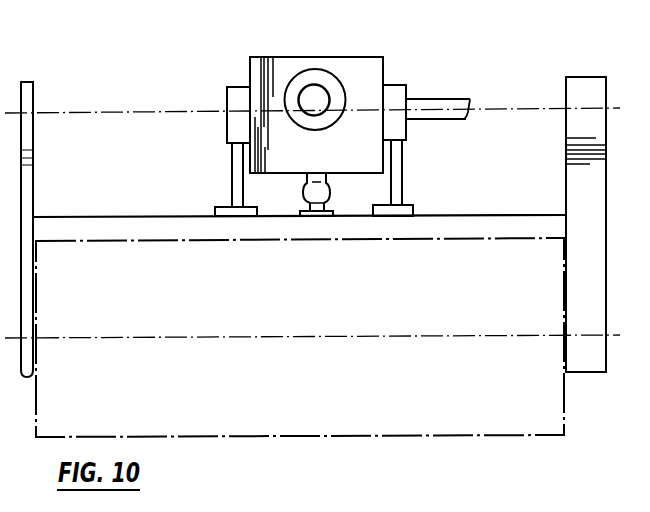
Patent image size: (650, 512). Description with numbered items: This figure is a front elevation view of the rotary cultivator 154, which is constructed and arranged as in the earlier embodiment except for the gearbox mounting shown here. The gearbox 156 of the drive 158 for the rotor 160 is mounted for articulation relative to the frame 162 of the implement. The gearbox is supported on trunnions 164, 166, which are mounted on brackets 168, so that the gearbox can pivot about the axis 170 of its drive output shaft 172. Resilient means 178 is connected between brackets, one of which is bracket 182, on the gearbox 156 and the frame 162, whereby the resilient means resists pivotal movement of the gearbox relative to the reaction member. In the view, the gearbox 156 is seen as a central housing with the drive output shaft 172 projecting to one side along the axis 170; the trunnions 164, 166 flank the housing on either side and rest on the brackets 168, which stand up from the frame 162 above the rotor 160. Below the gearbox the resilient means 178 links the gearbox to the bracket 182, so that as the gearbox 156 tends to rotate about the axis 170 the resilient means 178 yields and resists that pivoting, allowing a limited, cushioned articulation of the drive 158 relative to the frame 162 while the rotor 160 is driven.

The rotary cultivator 154 is at (471, 98).
The gearbox 156 is at (363, 57).
The drive 158 is at (244, 60).
The rotor 160 is at (512, 437).
The frame 162 is at (517, 215).
The trunnion 164 is at (393, 84).
The trunnion 166 is at (227, 88).
The brackets 168 is at (231, 165).
The axis 170 is at (528, 109).
The drive output shaft 172 is at (447, 120).
The resilient means 178 is at (305, 192).
The bracket 182 is at (332, 202).